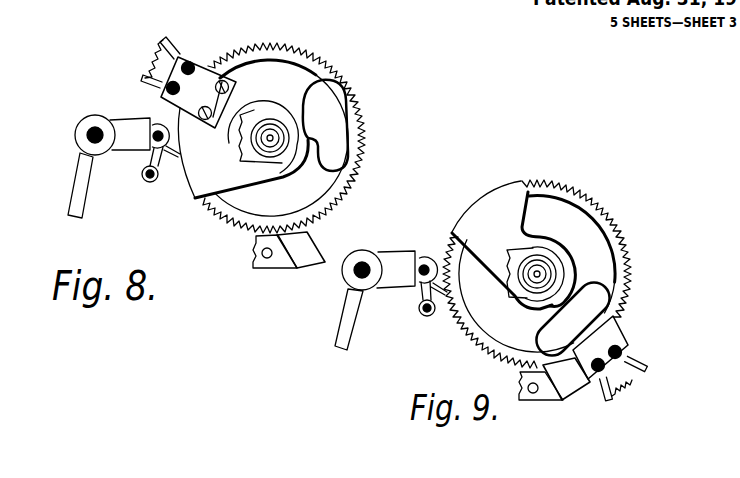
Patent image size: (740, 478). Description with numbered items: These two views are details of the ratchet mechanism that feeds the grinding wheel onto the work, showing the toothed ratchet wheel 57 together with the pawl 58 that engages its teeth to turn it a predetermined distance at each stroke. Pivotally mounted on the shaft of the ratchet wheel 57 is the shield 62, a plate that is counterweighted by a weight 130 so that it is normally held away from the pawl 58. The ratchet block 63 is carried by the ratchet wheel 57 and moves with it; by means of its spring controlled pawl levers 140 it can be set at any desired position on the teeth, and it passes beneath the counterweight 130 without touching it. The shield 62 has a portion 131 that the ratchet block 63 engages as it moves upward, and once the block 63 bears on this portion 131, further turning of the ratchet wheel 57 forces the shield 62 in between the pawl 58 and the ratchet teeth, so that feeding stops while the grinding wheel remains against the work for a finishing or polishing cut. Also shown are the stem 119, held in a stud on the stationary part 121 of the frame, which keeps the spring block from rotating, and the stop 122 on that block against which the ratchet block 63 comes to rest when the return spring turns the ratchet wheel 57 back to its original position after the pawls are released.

In FIG. 8, the ratchet wheel 57 is at (357, 160).
In FIG. 9, the ratchet wheel 57 is at (473, 330).
In FIG. 8, the pawl 58 is at (161, 176).
In FIG. 9, the pawl 58 is at (443, 263).
In FIG. 8, the shield 62 is at (198, 181).
In FIG. 9, the shield 62 is at (490, 203).
In FIG. 8, the ratchet block 63 is at (203, 82).
In FIG. 9, the ratchet block 63 is at (600, 347).
In FIG. 8, the stem 119 is at (258, 236).
In FIG. 9, the stem 119 is at (538, 371).
In FIG. 8, the stationary part of the frame 121 is at (275, 260).
In FIG. 9, the stationary part of the frame 121 is at (548, 386).
In FIG. 8, the stop 122 is at (307, 249).
In FIG. 9, the stop 122 is at (577, 386).
In FIG. 8, the weight 130 is at (331, 93).
In FIG. 9, the weight 130 is at (572, 318).
In FIG. 9, the portion of the shield 131 is at (528, 188).
In FIG. 8, the spring controlled pawl levers 140 is at (173, 45).
In FIG. 9, the spring controlled pawl levers 140 is at (647, 369).